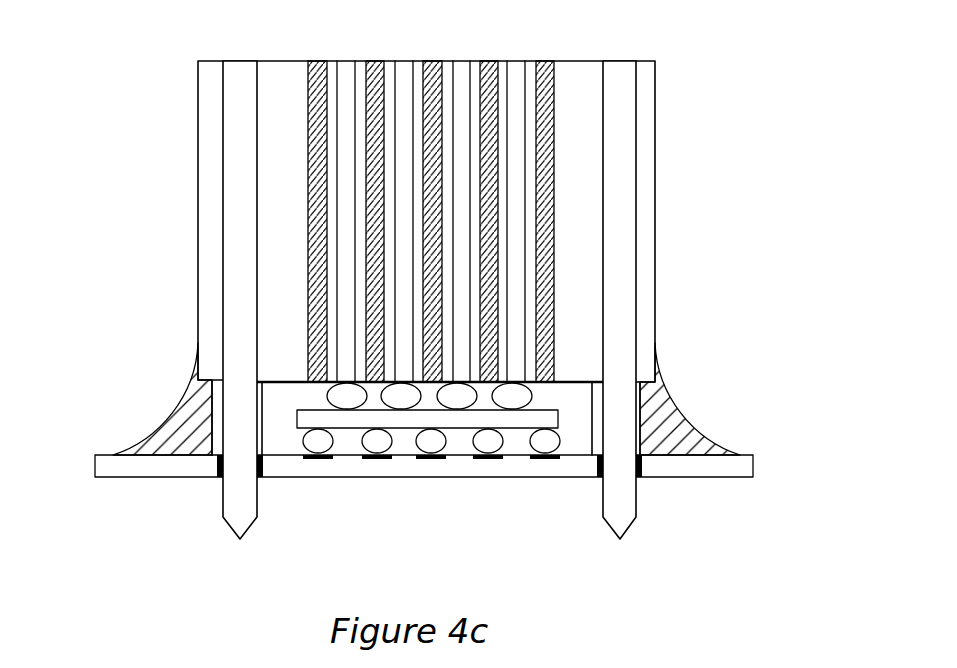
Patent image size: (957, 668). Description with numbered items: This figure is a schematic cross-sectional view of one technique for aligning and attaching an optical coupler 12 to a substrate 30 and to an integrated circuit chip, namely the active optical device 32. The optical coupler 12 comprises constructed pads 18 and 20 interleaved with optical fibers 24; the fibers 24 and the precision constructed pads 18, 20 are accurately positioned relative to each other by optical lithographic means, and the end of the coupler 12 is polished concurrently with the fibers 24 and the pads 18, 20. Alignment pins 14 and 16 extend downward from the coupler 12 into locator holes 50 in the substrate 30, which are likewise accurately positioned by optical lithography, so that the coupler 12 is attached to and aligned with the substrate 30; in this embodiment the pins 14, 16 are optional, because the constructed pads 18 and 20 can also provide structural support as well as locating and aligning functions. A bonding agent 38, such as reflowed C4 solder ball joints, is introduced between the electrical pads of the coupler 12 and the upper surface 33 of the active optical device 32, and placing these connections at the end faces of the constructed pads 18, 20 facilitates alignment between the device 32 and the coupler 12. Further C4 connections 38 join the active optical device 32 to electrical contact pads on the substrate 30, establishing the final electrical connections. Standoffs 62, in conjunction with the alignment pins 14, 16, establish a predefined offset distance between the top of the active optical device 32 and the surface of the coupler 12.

The optical coupler 12 is at (198, 137).
The alignment pin 14 is at (620, 507).
The alignment pin 16 is at (223, 506).
The constructed pad 18 is at (510, 61).
The constructed pad 20 is at (348, 61).
The optical fibers 24 is at (316, 61).
The substrate 30 is at (753, 458).
The active optical device 32 is at (458, 417).
The upper surface 33 is at (555, 410).
The C4 connections 38 is at (345, 398).
The locator holes 50 is at (217, 480).
The standoffs 62 is at (640, 410).